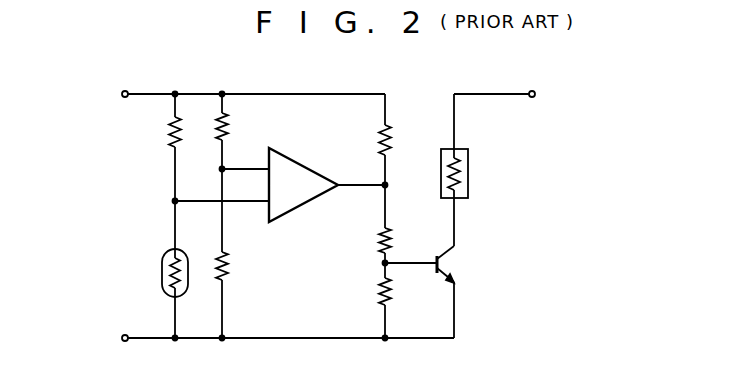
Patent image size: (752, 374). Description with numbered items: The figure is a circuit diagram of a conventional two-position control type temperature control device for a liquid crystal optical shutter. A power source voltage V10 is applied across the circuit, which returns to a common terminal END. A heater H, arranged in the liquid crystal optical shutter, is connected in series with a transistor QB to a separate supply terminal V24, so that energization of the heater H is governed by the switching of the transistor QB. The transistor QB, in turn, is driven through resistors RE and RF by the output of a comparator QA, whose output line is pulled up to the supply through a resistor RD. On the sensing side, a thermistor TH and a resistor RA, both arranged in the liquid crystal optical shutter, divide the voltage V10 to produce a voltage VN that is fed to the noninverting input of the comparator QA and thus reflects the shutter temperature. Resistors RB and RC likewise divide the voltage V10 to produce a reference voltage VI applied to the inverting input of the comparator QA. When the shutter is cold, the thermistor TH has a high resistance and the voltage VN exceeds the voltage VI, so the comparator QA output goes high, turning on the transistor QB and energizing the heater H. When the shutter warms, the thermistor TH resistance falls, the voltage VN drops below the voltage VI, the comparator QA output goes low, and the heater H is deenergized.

The power source voltage V10 is at (232, 94).
The heater supply voltage terminal V24 is at (513, 115).
The ground terminal END is at (261, 338).
The resistor RA is at (157, 171).
The resistor RB is at (235, 131).
The resistor RC is at (235, 255).
The resistor RD is at (398, 139).
The resistor RE is at (398, 225).
The resistor RF is at (398, 302).
The thermistor TH is at (157, 295).
The comparator QA is at (328, 182).
The transistor QB is at (431, 268).
The heater H is at (464, 173).
The voltage VI is at (245, 159).
The voltage VN is at (222, 216).